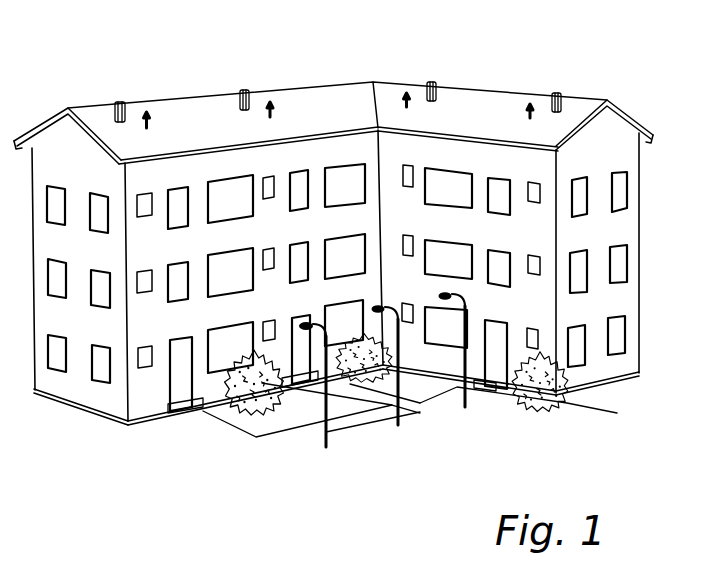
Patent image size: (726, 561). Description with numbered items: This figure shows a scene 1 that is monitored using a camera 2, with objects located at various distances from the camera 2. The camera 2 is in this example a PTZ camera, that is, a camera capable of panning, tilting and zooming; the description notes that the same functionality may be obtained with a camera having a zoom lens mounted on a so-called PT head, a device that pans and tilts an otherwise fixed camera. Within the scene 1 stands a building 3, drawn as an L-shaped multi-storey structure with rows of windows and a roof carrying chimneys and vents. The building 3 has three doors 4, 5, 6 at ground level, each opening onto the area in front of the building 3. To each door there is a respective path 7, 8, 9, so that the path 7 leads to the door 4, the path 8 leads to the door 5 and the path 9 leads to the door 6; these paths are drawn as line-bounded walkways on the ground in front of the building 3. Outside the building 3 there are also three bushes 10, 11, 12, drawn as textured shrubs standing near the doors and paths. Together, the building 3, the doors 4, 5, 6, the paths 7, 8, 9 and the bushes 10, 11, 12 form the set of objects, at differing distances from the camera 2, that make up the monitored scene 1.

The scene 1 is at (633, 67).
The camera 2 is at (305, 378).
The building 3 is at (192, 120).
The door 4 is at (182, 383).
The door 5 is at (300, 322).
The door 6 is at (495, 367).
The path 7 is at (222, 418).
The path 8 is at (353, 392).
The path 9 is at (443, 400).
The bush 10 is at (240, 403).
The bush 11 is at (375, 382).
The bush 12 is at (555, 402).